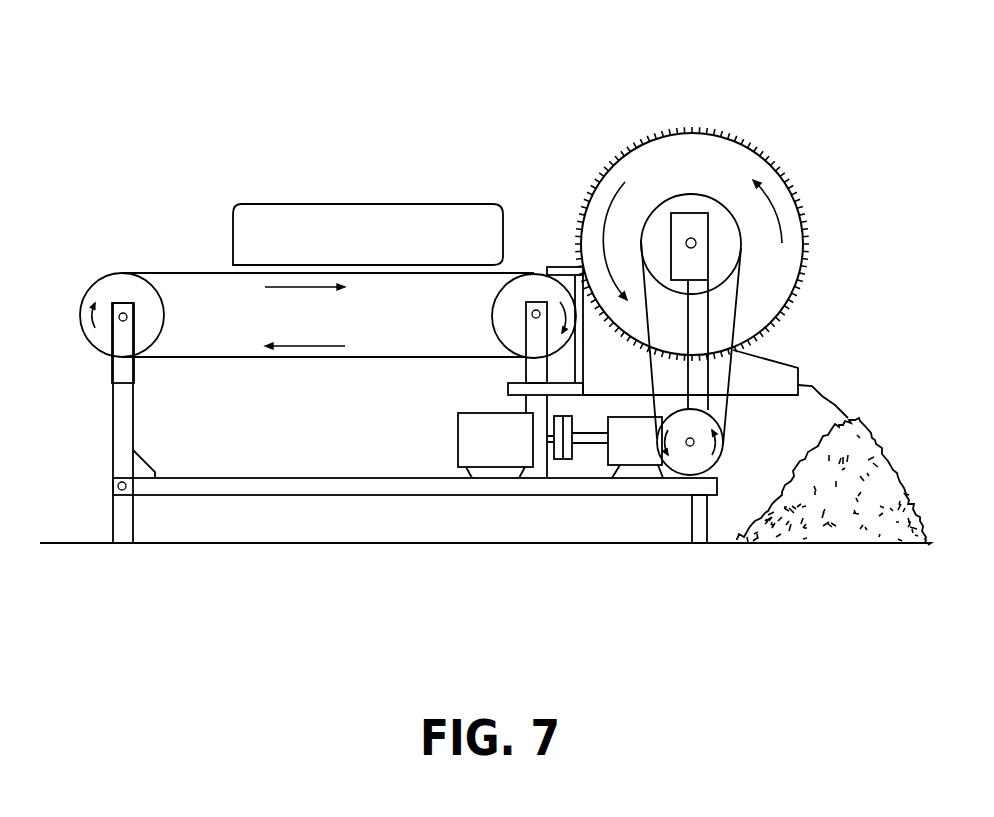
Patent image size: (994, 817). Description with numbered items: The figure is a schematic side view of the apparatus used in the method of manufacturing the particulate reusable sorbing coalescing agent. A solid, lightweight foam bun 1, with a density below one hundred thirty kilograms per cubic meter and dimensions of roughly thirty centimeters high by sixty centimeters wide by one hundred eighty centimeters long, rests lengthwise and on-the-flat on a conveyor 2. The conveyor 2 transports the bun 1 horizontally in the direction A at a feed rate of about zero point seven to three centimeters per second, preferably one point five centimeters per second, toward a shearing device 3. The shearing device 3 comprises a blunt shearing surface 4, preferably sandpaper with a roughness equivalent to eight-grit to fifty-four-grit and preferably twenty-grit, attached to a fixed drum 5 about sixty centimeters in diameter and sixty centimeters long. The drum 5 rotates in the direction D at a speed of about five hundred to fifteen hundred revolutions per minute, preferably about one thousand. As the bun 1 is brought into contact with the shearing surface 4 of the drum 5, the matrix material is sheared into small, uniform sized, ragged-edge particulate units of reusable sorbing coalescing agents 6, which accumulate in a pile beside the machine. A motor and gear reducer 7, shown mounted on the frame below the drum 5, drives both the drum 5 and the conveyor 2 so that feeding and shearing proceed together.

The bun 1 is at (376, 247).
The conveyor 2 is at (195, 273).
The shearing device 3 is at (638, 137).
The blunt shearing surface 4 is at (790, 183).
The fixed drum 5 is at (693, 157).
The particulate units of reusable sorbing coalescing agents 6 is at (849, 512).
The motor and gear reducer 7 is at (504, 445).
The direction A is at (293, 313).
The direction D is at (622, 227).